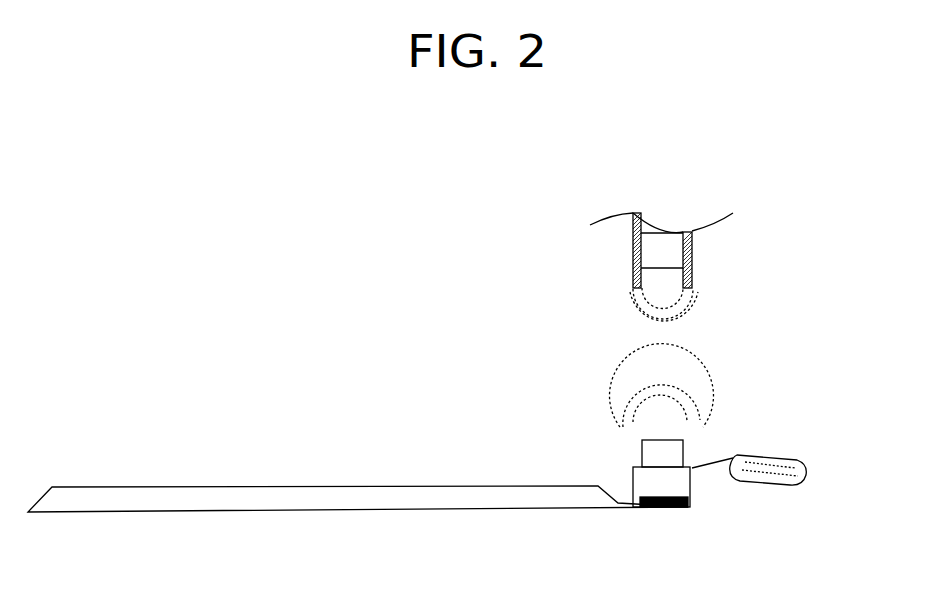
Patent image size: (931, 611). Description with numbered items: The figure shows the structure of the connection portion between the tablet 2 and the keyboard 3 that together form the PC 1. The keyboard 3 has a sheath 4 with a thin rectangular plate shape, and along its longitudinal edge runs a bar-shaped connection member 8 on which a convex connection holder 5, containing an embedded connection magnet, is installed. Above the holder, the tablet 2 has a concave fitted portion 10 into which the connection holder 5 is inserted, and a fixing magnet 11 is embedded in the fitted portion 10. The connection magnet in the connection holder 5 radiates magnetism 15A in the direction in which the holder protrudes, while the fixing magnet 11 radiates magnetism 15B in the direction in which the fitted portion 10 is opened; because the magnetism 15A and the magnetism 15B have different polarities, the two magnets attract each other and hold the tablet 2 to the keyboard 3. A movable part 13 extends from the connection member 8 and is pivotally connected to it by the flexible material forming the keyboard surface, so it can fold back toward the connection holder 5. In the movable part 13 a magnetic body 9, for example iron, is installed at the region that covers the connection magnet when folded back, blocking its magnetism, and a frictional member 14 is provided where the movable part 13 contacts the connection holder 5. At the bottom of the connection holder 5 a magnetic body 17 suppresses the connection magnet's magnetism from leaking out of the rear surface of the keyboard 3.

The PC 1 is at (377, 320).
The tablet 2 is at (692, 250).
The keyboard 3 is at (133, 451).
The sheath 4 is at (275, 497).
The connection holder 5 is at (642, 452).
The connection member 8 is at (650, 478).
The magnetic body 9 is at (787, 488).
The fitted portion 10 is at (672, 278).
The fixing magnet 11 is at (652, 250).
The movable part 13 is at (757, 490).
The frictional member 14 is at (768, 455).
The magnetism 15A is at (715, 388).
The magnetism 15B is at (693, 327).
The magnetic body 17 is at (677, 508).